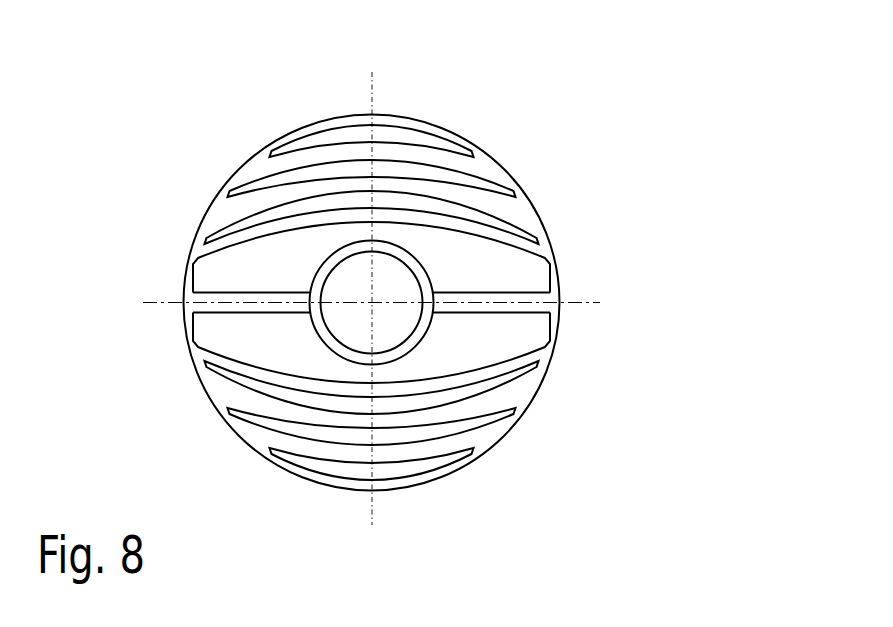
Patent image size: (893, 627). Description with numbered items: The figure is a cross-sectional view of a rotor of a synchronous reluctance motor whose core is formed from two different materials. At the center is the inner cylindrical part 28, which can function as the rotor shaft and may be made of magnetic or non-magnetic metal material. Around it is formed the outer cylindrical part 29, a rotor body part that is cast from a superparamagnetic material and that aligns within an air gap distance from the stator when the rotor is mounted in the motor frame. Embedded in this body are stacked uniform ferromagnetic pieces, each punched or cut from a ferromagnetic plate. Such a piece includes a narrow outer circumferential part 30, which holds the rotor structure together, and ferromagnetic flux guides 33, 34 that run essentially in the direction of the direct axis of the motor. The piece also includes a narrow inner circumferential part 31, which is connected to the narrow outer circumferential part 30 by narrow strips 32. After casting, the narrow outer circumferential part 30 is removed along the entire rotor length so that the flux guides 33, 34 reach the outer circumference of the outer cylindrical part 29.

The inner cylindrical part 28 is at (418, 323).
The outer cylindrical part 29 is at (422, 140).
The narrow outer circumferential part 30 is at (549, 236).
The narrow inner circumferential part 31 is at (417, 345).
The narrow strips 32 is at (541, 302).
The ferromagnetic flux guide 33 is at (472, 162).
The ferromagnetic flux guide 34 is at (510, 203).